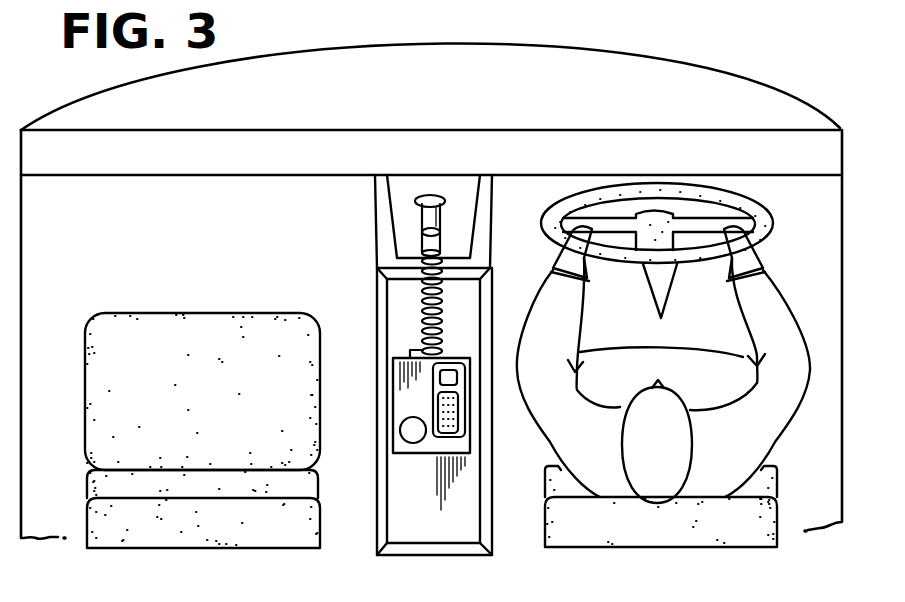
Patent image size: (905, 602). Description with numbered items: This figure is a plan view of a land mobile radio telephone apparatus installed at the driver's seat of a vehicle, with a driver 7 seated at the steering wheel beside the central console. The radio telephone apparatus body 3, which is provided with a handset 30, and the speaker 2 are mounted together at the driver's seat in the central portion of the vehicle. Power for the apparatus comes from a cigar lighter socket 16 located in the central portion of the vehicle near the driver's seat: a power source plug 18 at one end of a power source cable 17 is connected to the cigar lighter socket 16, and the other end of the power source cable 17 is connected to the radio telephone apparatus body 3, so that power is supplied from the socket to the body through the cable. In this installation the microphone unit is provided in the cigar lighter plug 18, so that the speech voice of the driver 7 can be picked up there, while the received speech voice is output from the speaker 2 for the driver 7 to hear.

The speaker unit 2 is at (410, 430).
The radio telephone apparatus body 3 is at (432, 456).
The driver 7 is at (767, 427).
The cigar lighter socket 16 is at (433, 196).
The power source cable 17 is at (420, 293).
The power source plug 18 is at (423, 227).
The handset 30 is at (458, 390).